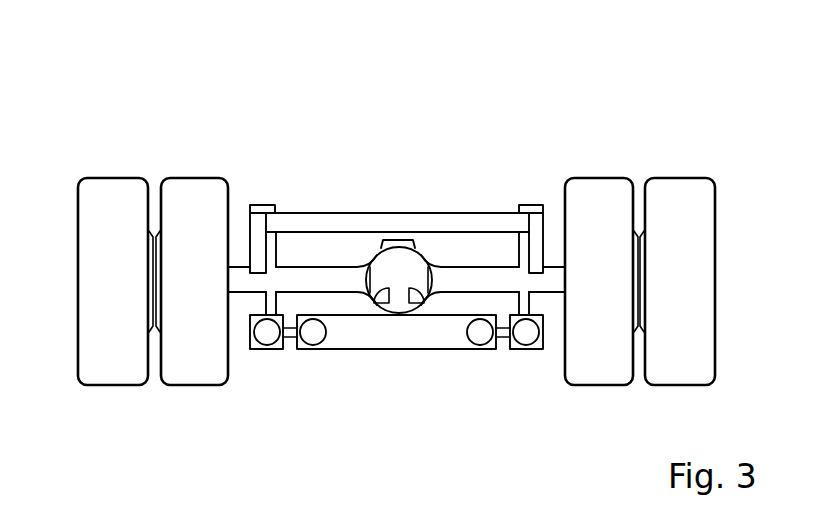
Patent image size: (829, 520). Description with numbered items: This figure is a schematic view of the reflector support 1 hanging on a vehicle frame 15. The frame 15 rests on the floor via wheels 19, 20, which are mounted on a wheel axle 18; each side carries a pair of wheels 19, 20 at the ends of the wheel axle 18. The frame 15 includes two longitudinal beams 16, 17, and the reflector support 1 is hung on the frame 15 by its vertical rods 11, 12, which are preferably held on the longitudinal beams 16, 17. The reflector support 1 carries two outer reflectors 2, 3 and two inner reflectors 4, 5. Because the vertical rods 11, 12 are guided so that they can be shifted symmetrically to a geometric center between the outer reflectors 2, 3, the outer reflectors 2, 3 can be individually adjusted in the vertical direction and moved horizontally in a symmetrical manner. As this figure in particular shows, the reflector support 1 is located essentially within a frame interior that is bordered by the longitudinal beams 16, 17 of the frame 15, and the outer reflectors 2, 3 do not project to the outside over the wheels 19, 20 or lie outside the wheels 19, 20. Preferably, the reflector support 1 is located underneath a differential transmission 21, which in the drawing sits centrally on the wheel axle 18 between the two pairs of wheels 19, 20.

The reflector support 1 is at (402, 387).
The outer reflector 2 is at (268, 343).
The outer reflector 3 is at (522, 345).
The inner reflector 4 is at (317, 345).
The inner reflector 5 is at (474, 345).
The vertical rod 11 is at (258, 305).
The vertical rod 12 is at (534, 305).
The frame 15 is at (395, 133).
The longitudinal beam 16 is at (249, 213).
The longitudinal beam 17 is at (545, 215).
The wheel axle 18 is at (312, 280).
The wheel 19 is at (192, 197).
The wheel 20 is at (680, 188).
The differential transmission 21 is at (413, 273).